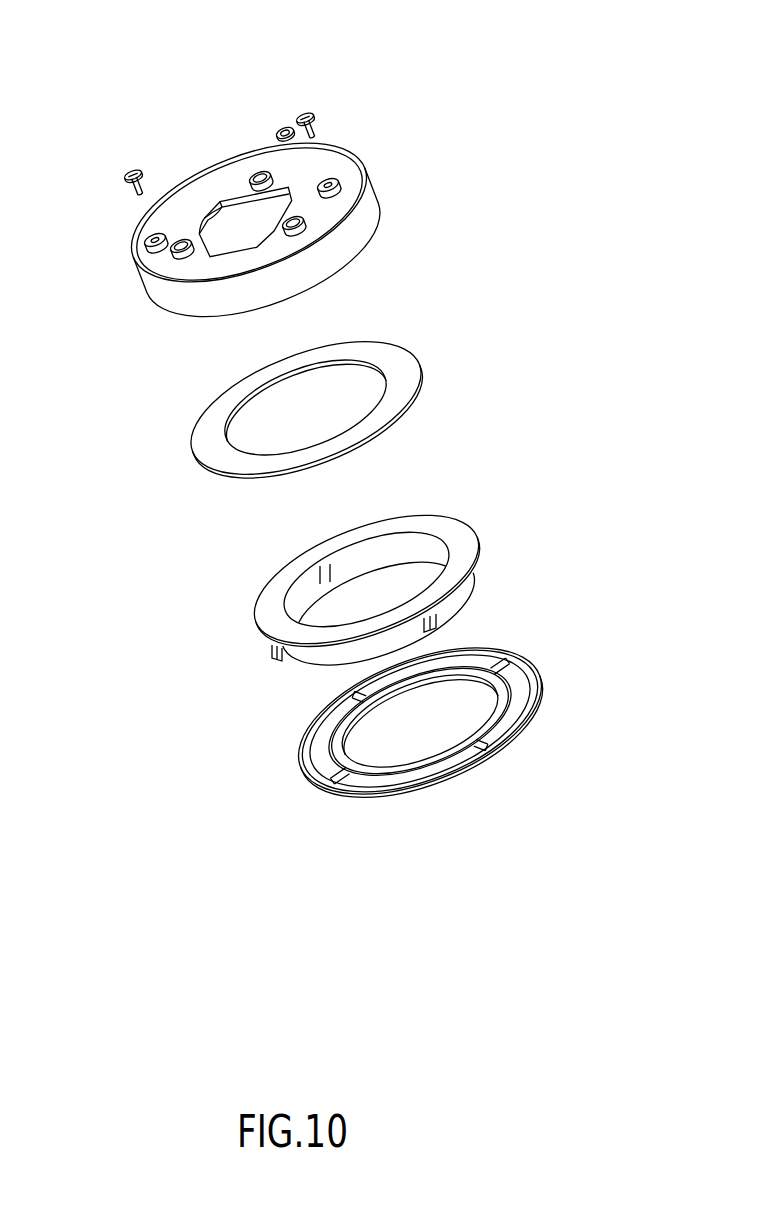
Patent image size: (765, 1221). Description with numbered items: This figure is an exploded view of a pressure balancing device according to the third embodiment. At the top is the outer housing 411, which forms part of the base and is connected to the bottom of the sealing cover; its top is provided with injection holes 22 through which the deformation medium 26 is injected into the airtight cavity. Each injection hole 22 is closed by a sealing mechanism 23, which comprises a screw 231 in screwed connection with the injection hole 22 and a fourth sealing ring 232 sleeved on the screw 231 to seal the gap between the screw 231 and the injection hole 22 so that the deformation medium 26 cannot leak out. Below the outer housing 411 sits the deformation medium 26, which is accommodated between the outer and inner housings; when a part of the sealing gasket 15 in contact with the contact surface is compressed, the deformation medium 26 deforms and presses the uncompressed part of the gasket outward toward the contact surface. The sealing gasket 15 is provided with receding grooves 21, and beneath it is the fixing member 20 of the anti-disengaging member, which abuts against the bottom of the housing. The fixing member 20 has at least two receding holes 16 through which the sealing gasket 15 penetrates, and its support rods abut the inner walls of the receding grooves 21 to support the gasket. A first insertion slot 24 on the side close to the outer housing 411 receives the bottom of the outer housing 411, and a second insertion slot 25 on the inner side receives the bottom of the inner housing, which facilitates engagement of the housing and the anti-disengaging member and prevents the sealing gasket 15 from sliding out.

The sealing gasket 15 is at (419, 575).
The receding holes 16 is at (318, 748).
The fixing member 20 is at (423, 721).
The receding grooves 21 is at (440, 628).
The injection holes 22 is at (338, 182).
The sealing mechanism 23 is at (226, 109).
The screw 231 is at (300, 116).
The fourth sealing ring 232 is at (263, 115).
The first insertion slot 24 is at (514, 728).
The second insertion slot 25 is at (503, 686).
The deformation medium 26 is at (217, 452).
The outer housing 411 is at (335, 245).